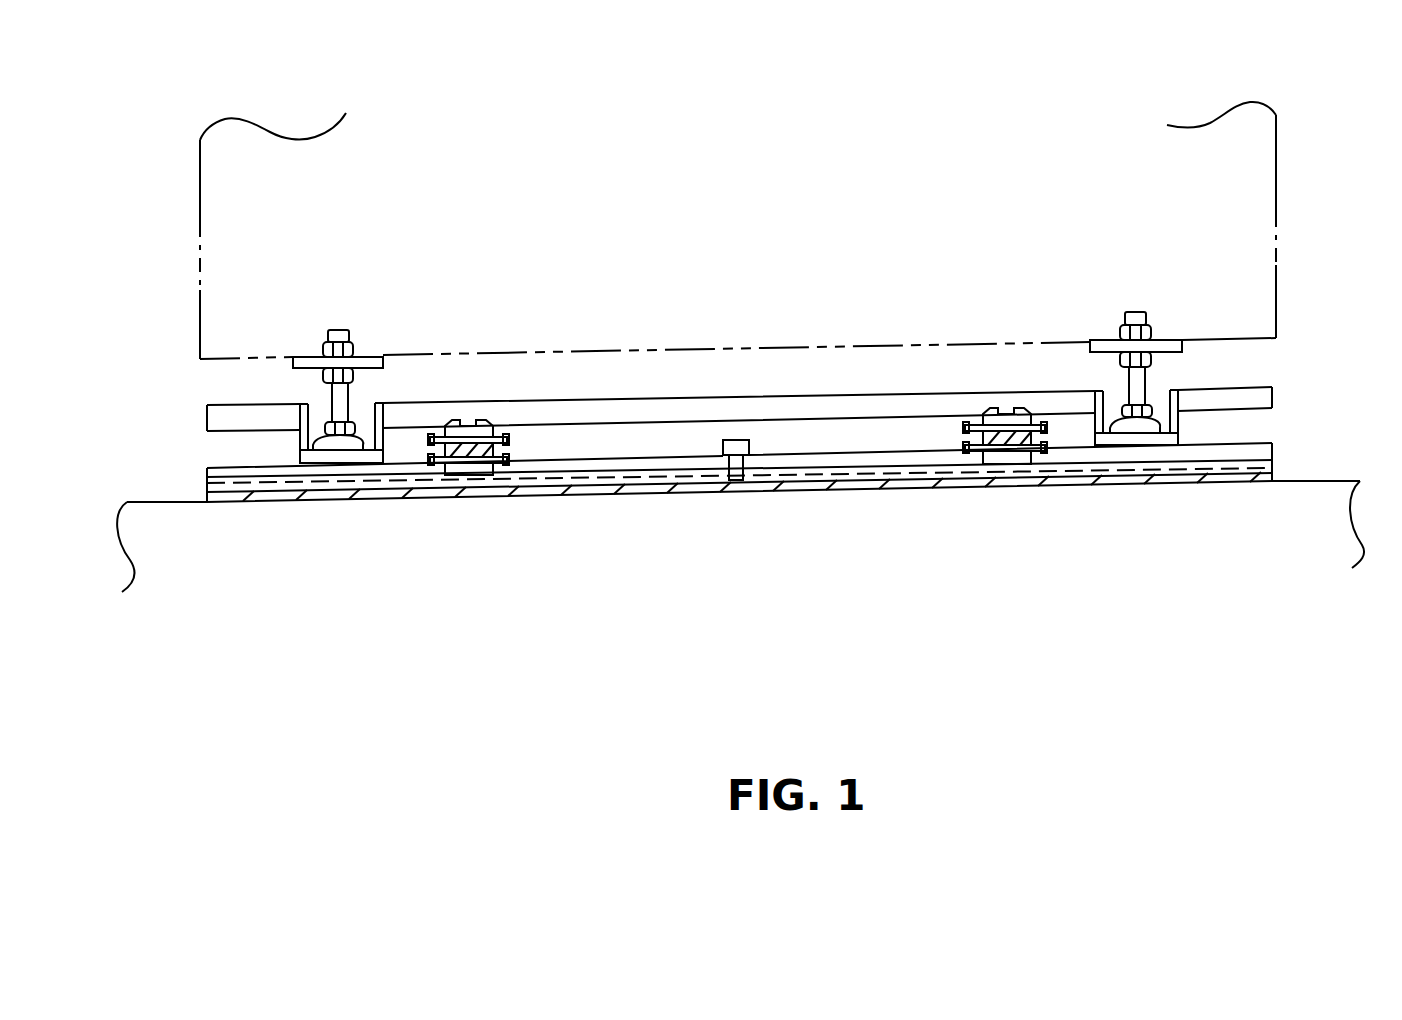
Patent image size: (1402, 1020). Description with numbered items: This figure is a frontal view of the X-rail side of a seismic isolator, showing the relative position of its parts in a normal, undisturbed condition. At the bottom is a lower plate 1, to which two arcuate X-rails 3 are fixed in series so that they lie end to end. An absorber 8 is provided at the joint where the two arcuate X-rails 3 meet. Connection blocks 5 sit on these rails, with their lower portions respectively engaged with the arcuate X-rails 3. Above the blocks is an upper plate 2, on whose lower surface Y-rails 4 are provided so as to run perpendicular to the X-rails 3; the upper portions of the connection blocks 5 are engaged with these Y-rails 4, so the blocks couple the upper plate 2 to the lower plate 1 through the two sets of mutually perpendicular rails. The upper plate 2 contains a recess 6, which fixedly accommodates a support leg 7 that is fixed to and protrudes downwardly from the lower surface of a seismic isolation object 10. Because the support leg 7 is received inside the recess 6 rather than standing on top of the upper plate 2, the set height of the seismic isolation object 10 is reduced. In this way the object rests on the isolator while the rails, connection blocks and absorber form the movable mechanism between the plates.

The lower plate 1 is at (207, 485).
The upper plate 2 is at (1262, 397).
The arcuate X-rails 3 is at (800, 461).
The Y-rails 4 is at (1003, 408).
The connection blocks 5 is at (484, 463).
The recess 6 is at (390, 416).
The support leg 7 is at (330, 397).
The absorber 8 is at (735, 444).
The seismic isolation object 10 is at (992, 149).